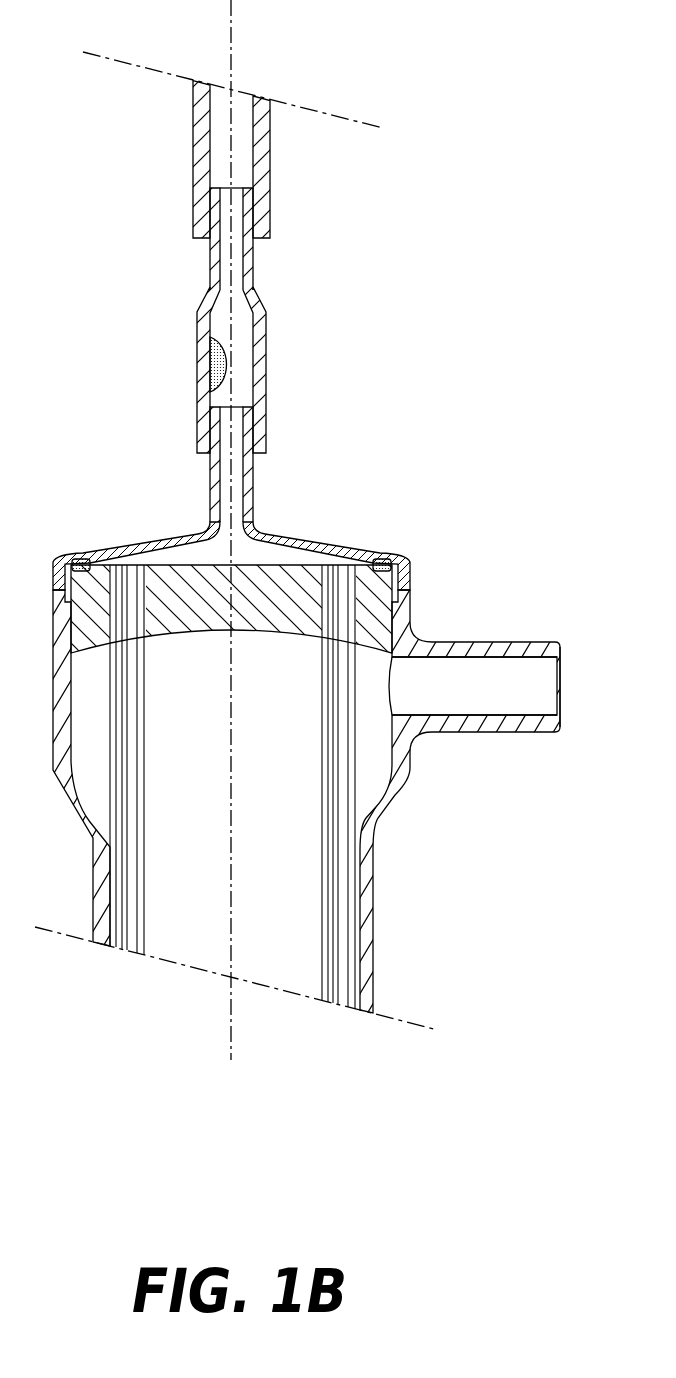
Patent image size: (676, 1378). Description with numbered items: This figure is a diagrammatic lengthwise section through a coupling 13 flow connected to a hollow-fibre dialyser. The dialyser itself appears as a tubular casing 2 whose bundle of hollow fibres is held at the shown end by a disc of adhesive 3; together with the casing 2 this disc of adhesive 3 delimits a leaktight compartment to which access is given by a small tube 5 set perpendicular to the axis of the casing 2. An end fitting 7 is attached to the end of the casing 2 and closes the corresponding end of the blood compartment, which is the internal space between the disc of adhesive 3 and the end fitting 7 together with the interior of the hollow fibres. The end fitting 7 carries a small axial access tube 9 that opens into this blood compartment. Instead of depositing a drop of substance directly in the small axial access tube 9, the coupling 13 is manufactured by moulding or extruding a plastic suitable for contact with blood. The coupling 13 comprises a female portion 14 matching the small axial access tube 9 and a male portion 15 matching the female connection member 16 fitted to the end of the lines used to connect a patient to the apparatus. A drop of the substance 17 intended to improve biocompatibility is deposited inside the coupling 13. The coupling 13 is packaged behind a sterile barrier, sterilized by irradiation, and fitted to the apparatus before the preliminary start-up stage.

The tubular casing 2 is at (363, 937).
The disc of adhesive 3 is at (286, 577).
The small tube 5 is at (500, 647).
The end fitting 7 is at (147, 547).
The small axial access tube 9 is at (269, 301).
The coupling 13 is at (268, 345).
The female portion 14 is at (257, 466).
The male portion 15 is at (249, 263).
The female connection member 16 is at (270, 173).
The drop of substance 17 is at (213, 370).